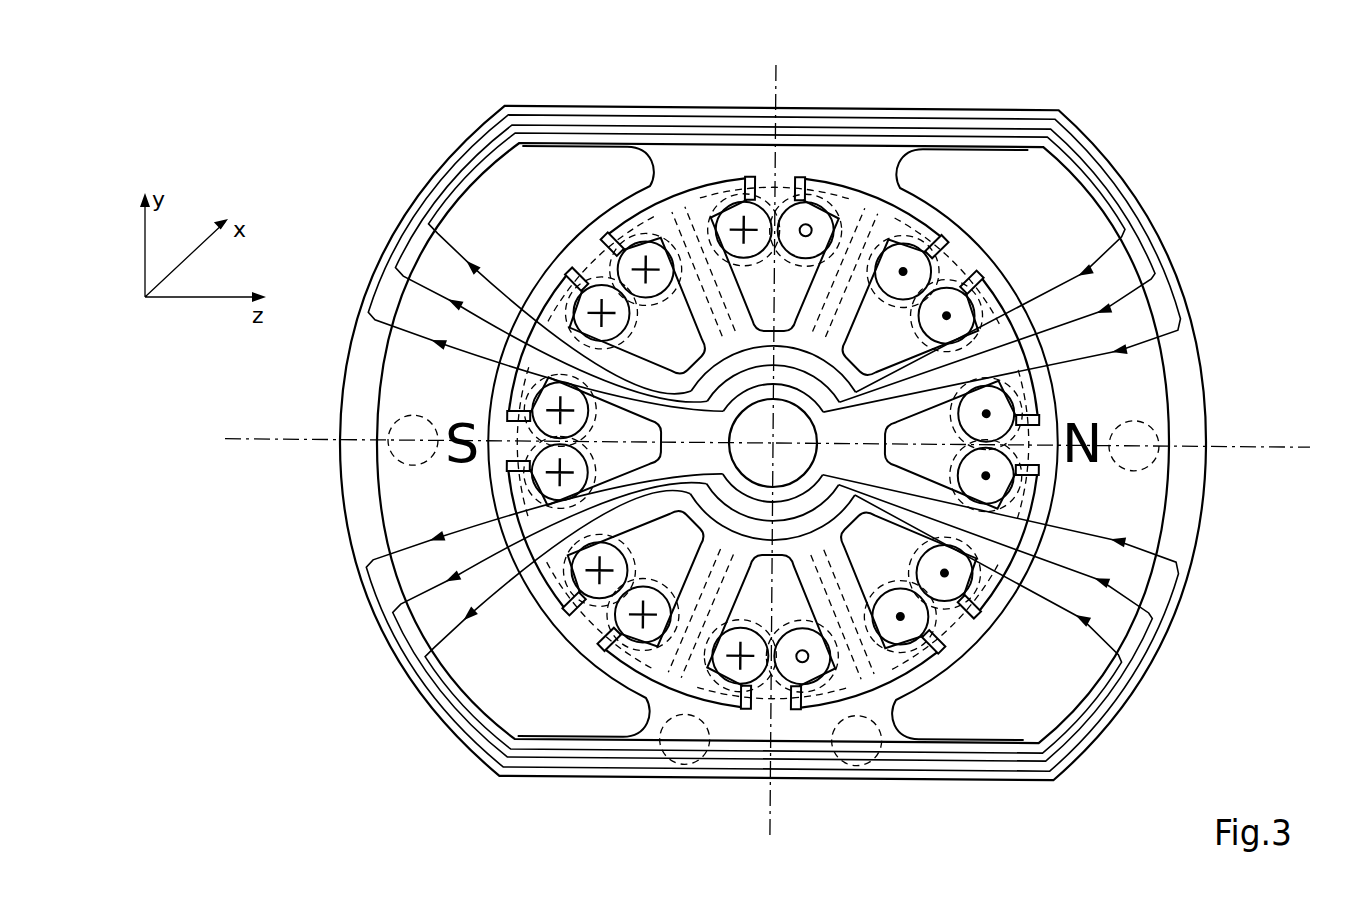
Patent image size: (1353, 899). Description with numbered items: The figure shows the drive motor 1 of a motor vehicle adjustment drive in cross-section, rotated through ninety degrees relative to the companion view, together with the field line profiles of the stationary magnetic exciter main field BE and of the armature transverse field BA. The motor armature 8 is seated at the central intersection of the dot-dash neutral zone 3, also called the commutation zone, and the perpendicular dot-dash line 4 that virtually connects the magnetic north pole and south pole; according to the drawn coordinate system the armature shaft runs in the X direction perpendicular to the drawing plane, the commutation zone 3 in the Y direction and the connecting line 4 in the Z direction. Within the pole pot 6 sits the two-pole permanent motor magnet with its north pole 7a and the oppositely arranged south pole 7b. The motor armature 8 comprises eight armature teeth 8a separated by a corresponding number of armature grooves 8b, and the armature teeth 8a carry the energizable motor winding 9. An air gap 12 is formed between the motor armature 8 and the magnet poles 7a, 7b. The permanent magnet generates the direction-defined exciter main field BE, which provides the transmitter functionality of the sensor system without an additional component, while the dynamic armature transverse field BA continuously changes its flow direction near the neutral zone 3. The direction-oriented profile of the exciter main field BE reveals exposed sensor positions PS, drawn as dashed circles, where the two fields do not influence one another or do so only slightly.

The drive motor 1 is at (1012, 107).
The neutral zone 3 is at (785, 97).
The dot-dash line 4 is at (1252, 452).
The pole pot 6 is at (1189, 519).
The north pole 7a is at (1062, 188).
The south pole 7b is at (495, 198).
The motor armature 8 is at (860, 200).
The armature teeth 8a is at (668, 213).
The armature grooves 8b is at (582, 248).
The motor winding 9 is at (747, 190).
The air gap 12 is at (985, 625).
The exciter main field BE is at (1140, 242).
The armature transverse field BA is at (1040, 380).
The sensor positions PS is at (1152, 432).